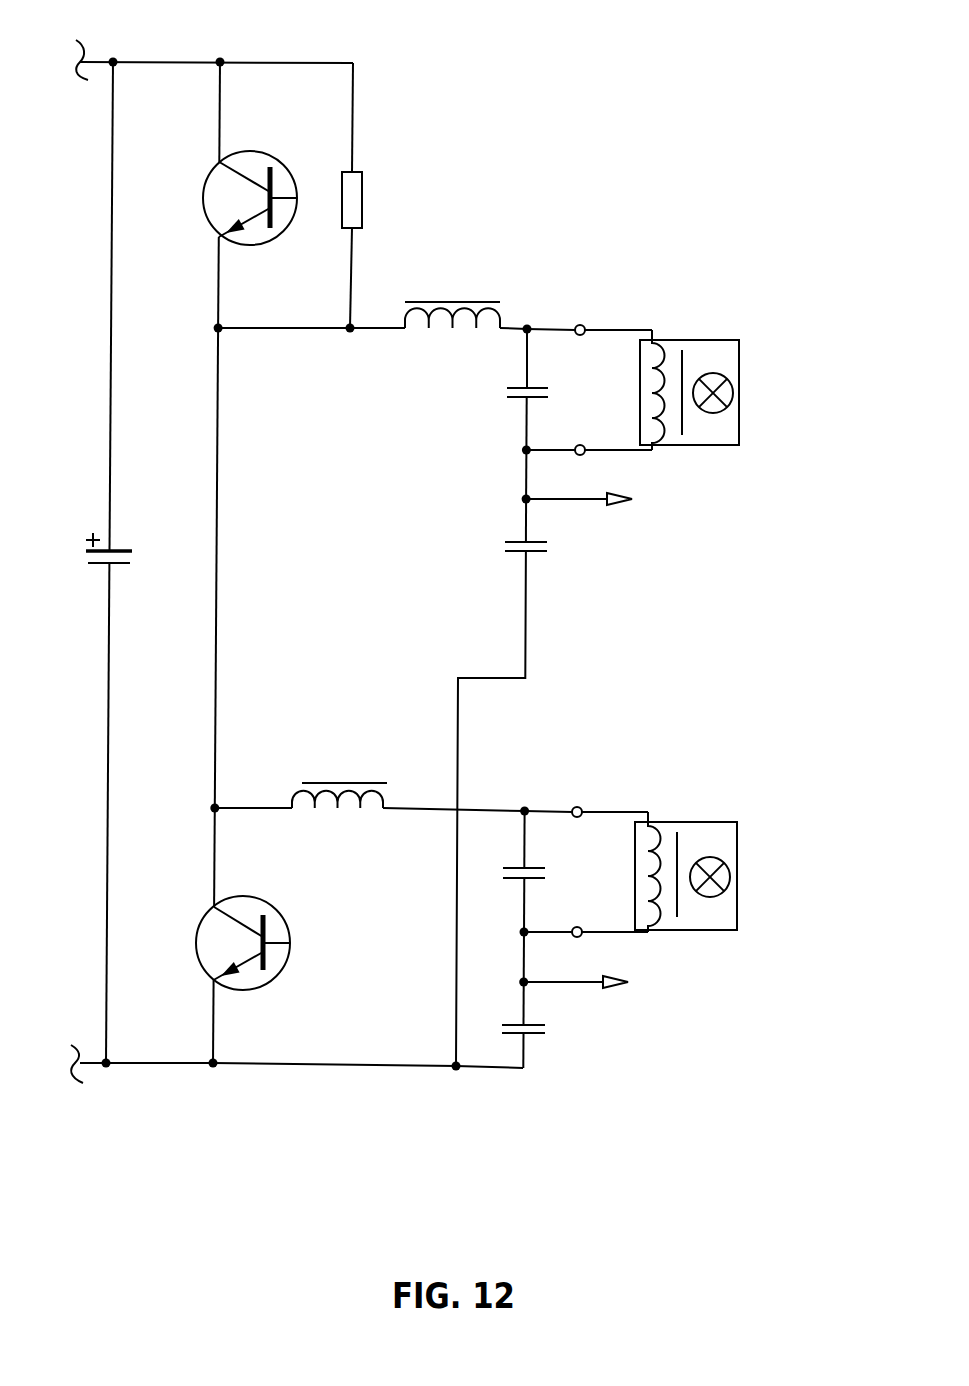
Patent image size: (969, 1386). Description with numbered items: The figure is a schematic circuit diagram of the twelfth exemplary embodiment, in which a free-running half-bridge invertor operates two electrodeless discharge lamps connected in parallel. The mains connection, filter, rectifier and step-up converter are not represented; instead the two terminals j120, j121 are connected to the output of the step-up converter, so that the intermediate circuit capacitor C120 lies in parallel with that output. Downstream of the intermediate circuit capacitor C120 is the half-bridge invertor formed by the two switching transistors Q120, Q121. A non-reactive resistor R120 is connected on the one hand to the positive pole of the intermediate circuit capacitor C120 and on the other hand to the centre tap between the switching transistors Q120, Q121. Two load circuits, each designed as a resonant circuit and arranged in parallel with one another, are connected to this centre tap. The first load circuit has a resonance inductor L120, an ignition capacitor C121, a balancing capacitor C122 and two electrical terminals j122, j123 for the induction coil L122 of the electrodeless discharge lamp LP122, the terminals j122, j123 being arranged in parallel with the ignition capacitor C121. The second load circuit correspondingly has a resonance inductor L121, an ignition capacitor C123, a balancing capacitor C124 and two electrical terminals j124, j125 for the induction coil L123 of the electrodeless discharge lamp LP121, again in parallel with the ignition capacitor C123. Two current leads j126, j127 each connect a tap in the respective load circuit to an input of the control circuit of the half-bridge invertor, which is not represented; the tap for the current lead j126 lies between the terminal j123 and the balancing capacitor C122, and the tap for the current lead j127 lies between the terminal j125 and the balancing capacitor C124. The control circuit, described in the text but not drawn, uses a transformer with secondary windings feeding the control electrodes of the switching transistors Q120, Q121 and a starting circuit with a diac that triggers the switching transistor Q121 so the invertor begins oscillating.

The terminal j120 is at (89, 43).
The terminal j121 is at (71, 1079).
The intermediate circuit capacitor C120 is at (134, 542).
The switching transistor Q120 is at (255, 184).
The switching transistor Q121 is at (250, 928).
The non-reactive resistor R120 is at (387, 195).
The resonance inductor L120 is at (452, 298).
The resonance inductor L121 is at (339, 781).
The ignition capacitor C121 is at (554, 377).
The balancing capacitor C122 is at (552, 562).
The ignition capacitor C123 is at (550, 857).
The balancing capacitor C124 is at (550, 1043).
The electrical terminal j122 is at (589, 315).
The electrical terminal j123 is at (589, 465).
The electrical terminal j124 is at (586, 798).
The electrical terminal j125 is at (586, 947).
The current lead j126 is at (607, 502).
The current lead j127 is at (608, 982).
The induction coil L122 is at (677, 342).
The induction coil L123 is at (668, 823).
The electrodeless discharge lamp LP122 is at (730, 392).
The electrodeless discharge lamp LP121 is at (726, 876).